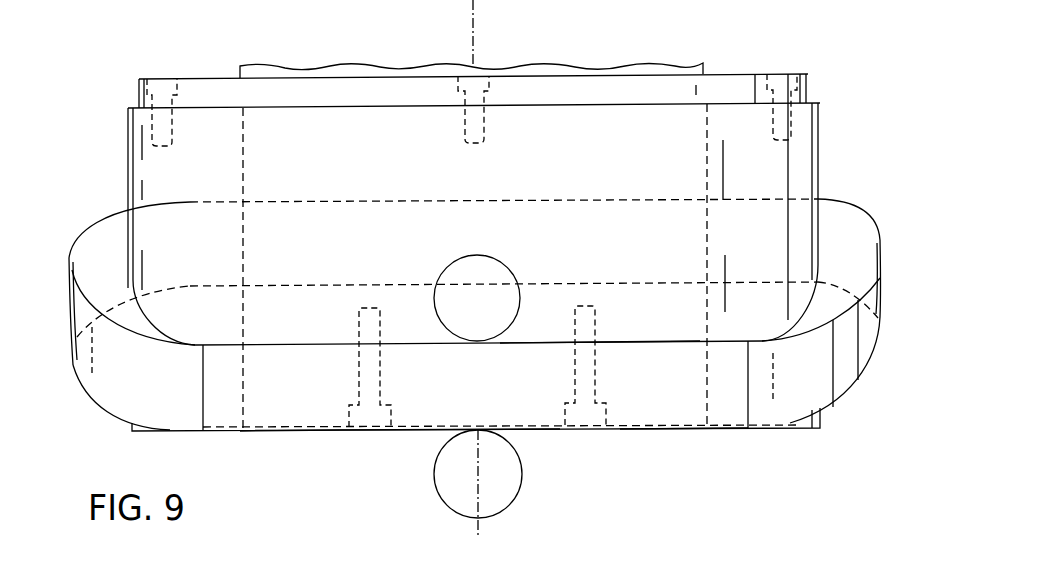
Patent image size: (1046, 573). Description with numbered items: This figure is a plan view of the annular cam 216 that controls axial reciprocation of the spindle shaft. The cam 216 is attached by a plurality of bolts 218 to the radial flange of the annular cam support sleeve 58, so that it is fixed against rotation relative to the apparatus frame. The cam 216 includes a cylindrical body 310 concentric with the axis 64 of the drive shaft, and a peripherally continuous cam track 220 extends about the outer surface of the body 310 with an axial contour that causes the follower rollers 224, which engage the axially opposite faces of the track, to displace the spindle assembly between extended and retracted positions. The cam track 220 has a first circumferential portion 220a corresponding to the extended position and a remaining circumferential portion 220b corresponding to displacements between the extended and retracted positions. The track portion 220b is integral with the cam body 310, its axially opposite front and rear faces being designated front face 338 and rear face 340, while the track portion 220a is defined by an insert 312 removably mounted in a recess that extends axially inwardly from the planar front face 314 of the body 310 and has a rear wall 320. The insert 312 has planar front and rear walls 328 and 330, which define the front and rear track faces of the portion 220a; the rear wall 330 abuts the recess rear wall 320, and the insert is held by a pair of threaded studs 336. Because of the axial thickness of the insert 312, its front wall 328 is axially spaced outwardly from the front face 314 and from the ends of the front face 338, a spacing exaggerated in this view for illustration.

The annular cam support sleeve 58 is at (665, 85).
The axis 64 is at (480, 521).
The annular cam 216 is at (859, 143).
The bolts 218 is at (160, 80).
The cam track 220 is at (878, 292).
The first circumferential portion of cam track 220a is at (412, 416).
The remaining circumferential portion of cam track 220b is at (78, 368).
The cam rollers 224 is at (505, 262).
The cylindrical body 310 is at (128, 181).
The insert 312 is at (665, 339).
The planar front face 314 is at (306, 437).
The rear wall 320 is at (415, 346).
The front wall of insert 328 is at (673, 430).
The rear wall of insert 330 is at (537, 342).
The threaded studs 336 is at (370, 415).
The front face of track portion 338 is at (113, 415).
The rear face of track portion 340 is at (91, 270).